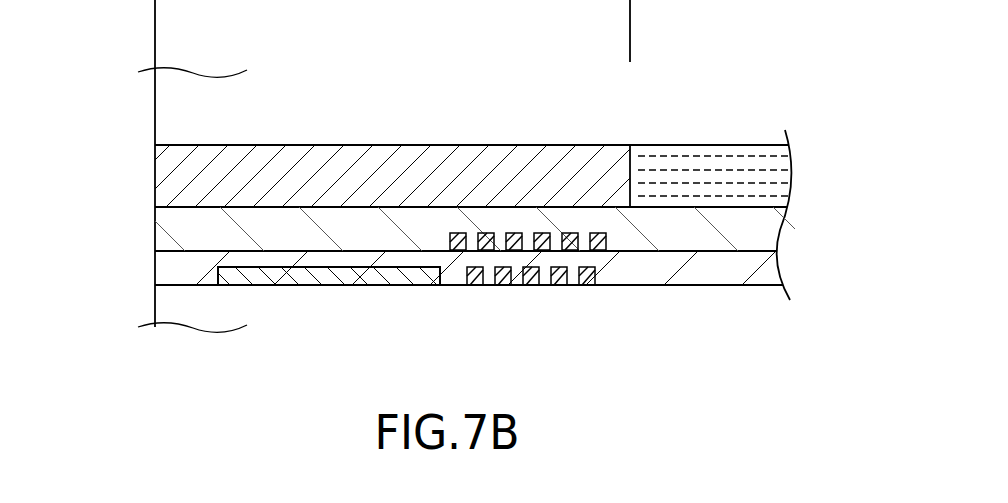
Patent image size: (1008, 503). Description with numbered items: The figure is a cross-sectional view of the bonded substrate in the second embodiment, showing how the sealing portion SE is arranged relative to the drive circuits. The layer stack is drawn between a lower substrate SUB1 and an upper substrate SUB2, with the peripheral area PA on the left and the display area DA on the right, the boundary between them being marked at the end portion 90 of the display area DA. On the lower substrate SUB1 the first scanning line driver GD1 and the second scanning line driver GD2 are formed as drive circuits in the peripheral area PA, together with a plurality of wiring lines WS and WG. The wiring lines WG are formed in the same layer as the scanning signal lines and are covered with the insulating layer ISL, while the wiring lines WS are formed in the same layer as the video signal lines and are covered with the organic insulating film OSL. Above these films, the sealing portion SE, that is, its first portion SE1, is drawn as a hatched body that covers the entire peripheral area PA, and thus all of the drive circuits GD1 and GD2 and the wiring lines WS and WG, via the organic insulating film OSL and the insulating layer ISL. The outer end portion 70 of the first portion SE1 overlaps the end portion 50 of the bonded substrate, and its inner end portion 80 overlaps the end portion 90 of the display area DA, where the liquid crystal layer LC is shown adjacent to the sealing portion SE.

The end portion 50 is at (155, 91).
The second substrate SUB2 is at (155, 125).
The outer end portion 70 is at (155, 179).
The first portion SE1 is at (398, 145).
The sealing portion SE is at (542, 140).
The inner end portion 80 is at (634, 168).
The end portion 90 is at (632, 40).
The liquid crystal layer LC is at (792, 176).
The organic insulating film OSL is at (155, 227).
The insulating layer ISL is at (155, 267).
The first substrate SUB1 is at (155, 305).
The first scanning line driver GD1 is at (332, 286).
The second scanning line driver GD2 is at (329, 276).
The wiring lines WS is at (458, 251).
The wiring lines WG is at (557, 286).
The peripheral area PA is at (630, 27).
The display area DA is at (630, 27).